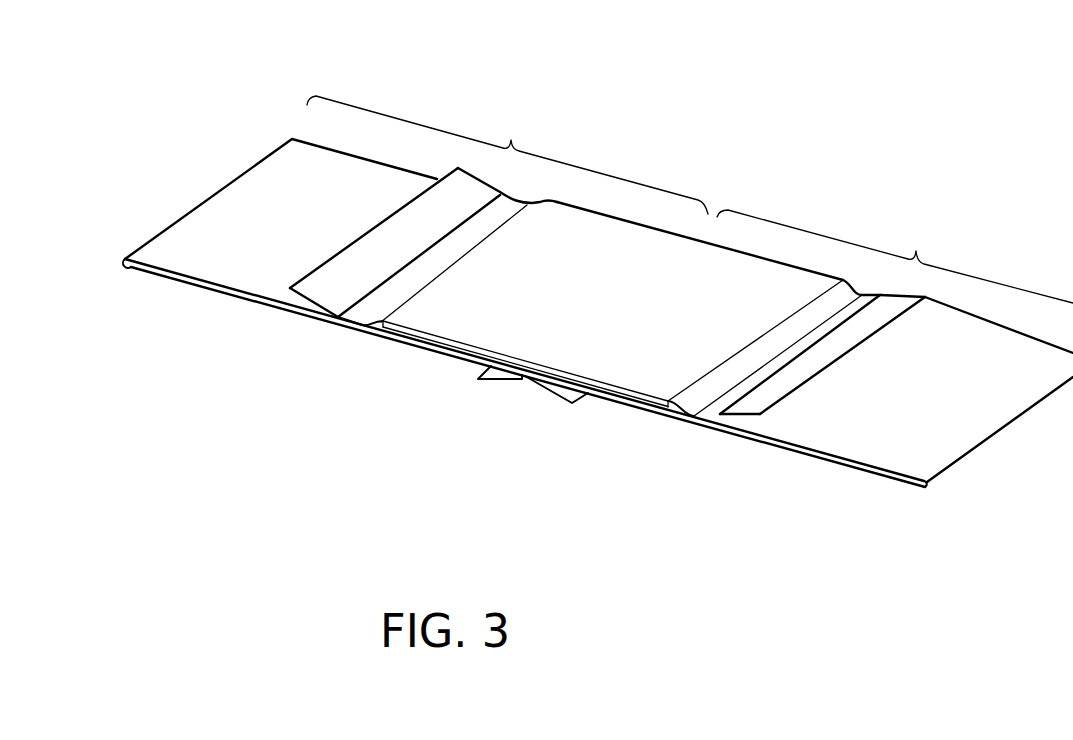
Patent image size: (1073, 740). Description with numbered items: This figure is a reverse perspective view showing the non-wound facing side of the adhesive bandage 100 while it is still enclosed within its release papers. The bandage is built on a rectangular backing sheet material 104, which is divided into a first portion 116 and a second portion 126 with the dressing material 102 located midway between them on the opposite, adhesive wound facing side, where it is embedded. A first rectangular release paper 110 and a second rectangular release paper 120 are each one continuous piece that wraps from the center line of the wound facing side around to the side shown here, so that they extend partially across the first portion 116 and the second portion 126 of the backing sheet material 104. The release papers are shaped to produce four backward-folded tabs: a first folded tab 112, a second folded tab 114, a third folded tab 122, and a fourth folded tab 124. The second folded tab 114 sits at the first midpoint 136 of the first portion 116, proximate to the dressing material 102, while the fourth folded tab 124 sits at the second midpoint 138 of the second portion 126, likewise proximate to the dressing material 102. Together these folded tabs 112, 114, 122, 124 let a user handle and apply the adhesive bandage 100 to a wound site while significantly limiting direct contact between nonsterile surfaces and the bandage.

The adhesive bandage 100 is at (858, 104).
The dressing material 102 is at (423, 338).
The rectangular backing sheet material 104 is at (622, 310).
The first rectangular release paper 110 is at (300, 229).
The first folded tab 112 is at (498, 388).
The second folded tab 114 is at (327, 283).
The first portion 116 is at (507, 155).
The second rectangular release paper 120 is at (927, 404).
The third folded tab 122 is at (550, 398).
The fourth folded tab 124 is at (752, 400).
The second portion 126 is at (895, 256).
The first midpoint 136 is at (345, 344).
The second midpoint 138 is at (695, 438).